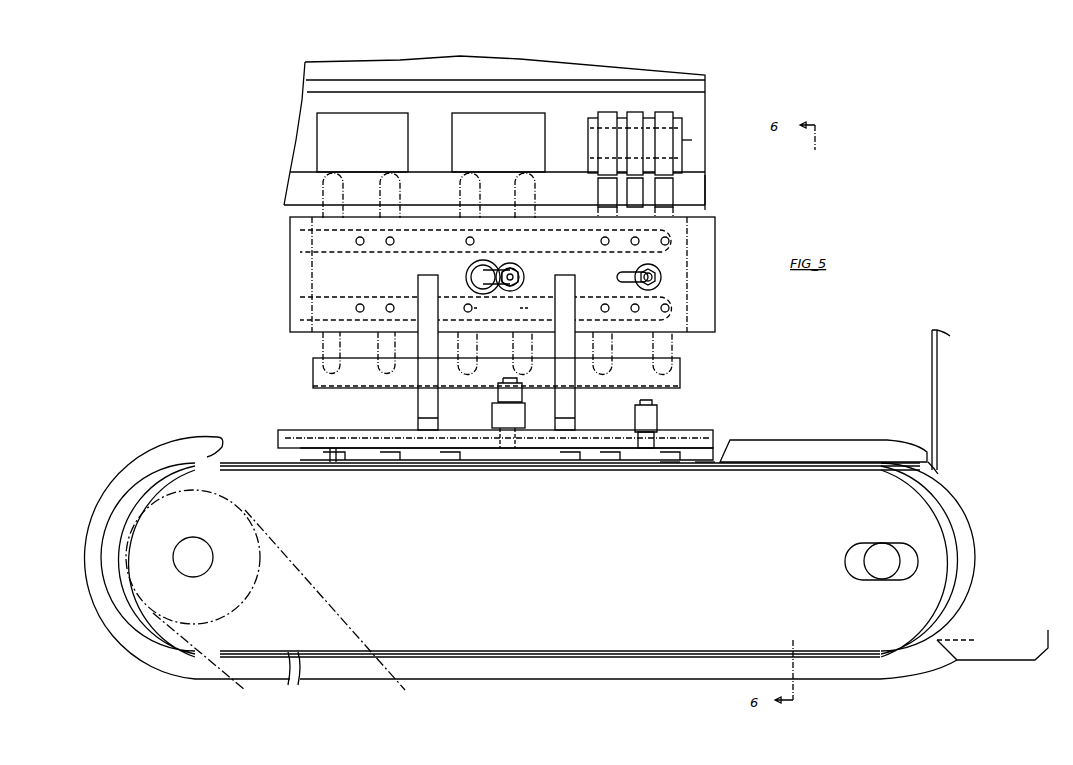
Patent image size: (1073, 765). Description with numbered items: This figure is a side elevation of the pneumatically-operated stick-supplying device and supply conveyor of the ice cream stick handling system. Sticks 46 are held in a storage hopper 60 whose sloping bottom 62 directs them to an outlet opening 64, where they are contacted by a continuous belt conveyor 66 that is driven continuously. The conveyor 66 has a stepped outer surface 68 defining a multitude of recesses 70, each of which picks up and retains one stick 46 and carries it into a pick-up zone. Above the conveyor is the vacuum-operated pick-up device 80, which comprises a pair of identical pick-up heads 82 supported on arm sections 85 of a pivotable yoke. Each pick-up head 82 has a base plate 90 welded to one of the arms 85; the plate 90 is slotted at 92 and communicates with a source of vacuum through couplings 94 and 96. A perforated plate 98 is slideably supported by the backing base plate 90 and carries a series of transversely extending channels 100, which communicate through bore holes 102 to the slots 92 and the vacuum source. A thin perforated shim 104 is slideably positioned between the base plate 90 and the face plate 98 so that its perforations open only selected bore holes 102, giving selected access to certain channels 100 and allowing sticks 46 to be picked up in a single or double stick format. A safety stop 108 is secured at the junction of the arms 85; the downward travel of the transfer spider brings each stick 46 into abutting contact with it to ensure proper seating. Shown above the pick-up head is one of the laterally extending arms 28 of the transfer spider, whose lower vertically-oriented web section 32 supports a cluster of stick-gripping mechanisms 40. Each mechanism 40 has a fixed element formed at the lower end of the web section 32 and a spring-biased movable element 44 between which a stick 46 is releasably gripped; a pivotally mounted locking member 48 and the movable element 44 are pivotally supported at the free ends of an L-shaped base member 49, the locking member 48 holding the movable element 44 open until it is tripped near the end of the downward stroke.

The laterally extending arm 28 is at (494, 133).
The stick-gripping mechanism 40 is at (700, 115).
The vertically-oriented web section 32 is at (706, 172).
The stick 46 is at (340, 200).
The locking member 48 is at (645, 112).
The L-shaped base member 49 is at (696, 139).
The movable element 44 is at (635, 198).
The pick-up head 82 is at (716, 240).
The base plate 90 is at (405, 437).
The slot 92 is at (400, 250).
The bore hole 102 is at (392, 475).
The safety stop 108 is at (618, 390).
The arm section 85 is at (438, 343).
The pick-up device 80 is at (290, 345).
The coupling 96 is at (491, 408).
The coupling 94 is at (658, 414).
The perforated shim 104 is at (374, 445).
The perforated plate 98 is at (430, 455).
The transversely extending channel 100 is at (340, 462).
The stepped outer surface 68 is at (678, 466).
The recess 70 is at (706, 466).
The continuous belt conveyor 66 is at (840, 470).
The storage hopper 60 is at (956, 400).
The outlet opening 64 is at (945, 470).
The sloping bottom 62 is at (288, 465).